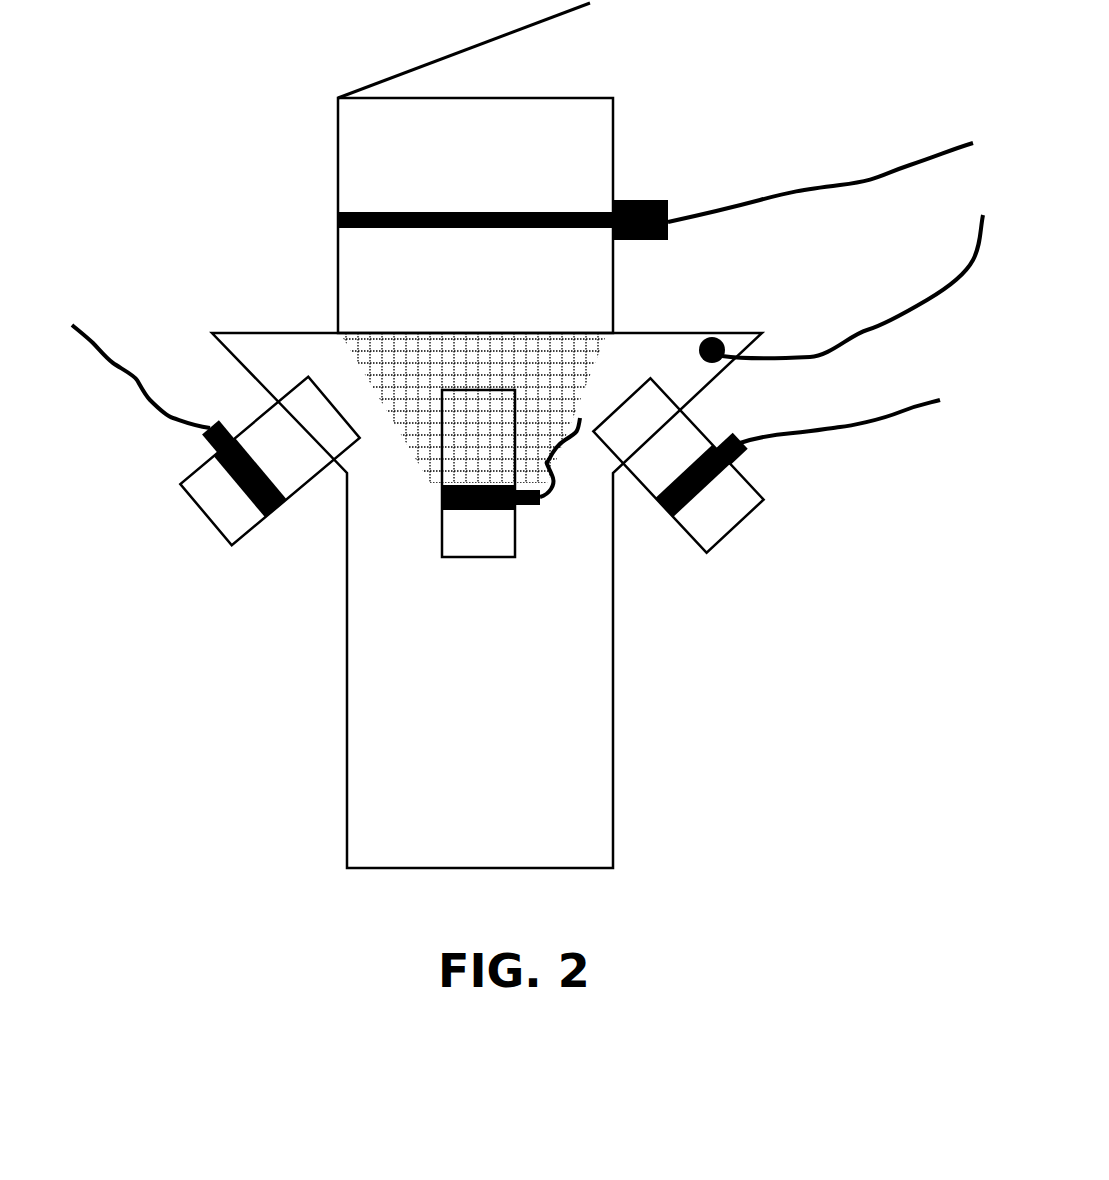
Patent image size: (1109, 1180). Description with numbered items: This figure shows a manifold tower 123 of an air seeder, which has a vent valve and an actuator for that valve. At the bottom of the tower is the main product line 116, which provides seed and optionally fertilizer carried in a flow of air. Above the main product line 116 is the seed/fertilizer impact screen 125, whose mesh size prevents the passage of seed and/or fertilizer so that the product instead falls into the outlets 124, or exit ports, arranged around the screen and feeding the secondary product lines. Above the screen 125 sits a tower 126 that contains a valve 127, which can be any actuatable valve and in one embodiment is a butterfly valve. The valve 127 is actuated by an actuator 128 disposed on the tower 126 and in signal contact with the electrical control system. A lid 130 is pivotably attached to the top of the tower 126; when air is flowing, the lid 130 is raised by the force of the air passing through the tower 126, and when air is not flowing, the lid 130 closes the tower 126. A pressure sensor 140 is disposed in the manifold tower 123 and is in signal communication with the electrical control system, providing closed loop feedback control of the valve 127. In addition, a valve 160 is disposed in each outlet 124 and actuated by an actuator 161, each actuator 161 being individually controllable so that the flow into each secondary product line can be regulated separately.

The main product line 116 is at (613, 808).
The manifold tower 123 is at (158, 160).
The outlets 124 is at (617, 403).
The seed/fertilizer impact screen 125 is at (590, 363).
The tower 126 is at (613, 110).
The valve 127 is at (577, 226).
The actuator 128 is at (667, 200).
The lid 130 is at (402, 71).
The pressure sensor 140 is at (722, 340).
The valve 160 is at (660, 500).
The actuator 161 is at (210, 446).